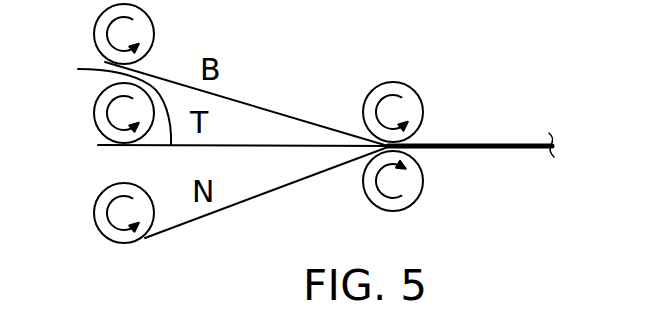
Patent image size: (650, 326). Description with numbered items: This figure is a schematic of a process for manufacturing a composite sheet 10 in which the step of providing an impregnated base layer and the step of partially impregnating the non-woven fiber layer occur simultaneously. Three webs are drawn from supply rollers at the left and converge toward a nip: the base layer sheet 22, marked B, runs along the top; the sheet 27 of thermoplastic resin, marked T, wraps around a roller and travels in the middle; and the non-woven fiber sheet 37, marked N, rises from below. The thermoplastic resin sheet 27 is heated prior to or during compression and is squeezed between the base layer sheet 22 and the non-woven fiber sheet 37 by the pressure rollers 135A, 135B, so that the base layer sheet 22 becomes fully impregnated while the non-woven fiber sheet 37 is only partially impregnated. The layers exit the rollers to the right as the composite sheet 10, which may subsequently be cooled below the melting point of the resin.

The composite sheet 10 is at (500, 143).
The sheet of the base layer 22 is at (268, 110).
The sheet of thermoplastic resin 27 is at (103, 100).
The non-woven fiber sheet 37 is at (253, 198).
The pressure roller 135A is at (397, 83).
The pressure roller 135B is at (422, 184).